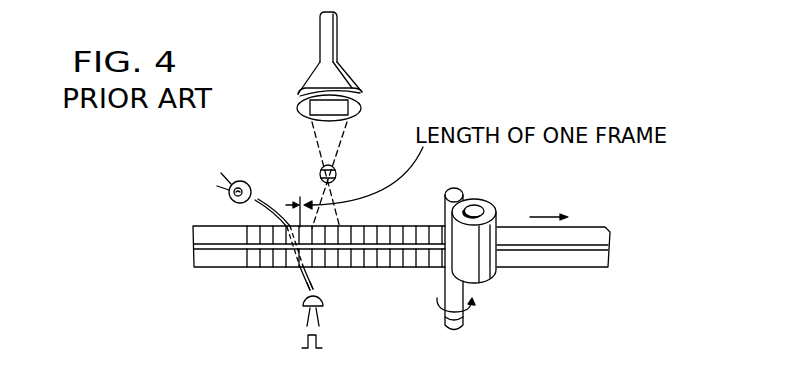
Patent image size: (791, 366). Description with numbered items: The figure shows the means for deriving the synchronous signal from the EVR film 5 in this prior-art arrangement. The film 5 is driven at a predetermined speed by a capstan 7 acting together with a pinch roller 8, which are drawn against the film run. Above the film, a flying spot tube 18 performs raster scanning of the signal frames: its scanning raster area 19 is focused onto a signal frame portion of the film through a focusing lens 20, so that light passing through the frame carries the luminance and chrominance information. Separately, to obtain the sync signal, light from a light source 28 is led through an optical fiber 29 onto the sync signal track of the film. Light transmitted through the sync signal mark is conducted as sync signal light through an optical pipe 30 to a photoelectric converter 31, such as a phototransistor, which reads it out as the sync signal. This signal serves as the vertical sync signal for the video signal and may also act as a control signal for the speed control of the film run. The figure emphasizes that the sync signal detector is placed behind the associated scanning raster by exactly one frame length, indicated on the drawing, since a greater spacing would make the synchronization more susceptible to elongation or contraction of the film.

The EVR film 5 is at (220, 268).
The capstan 7 is at (453, 188).
The pinch roller 8 is at (490, 204).
The flying spot tube 18 is at (338, 40).
The scanning raster area 19 is at (361, 110).
The focusing lens 20 is at (337, 173).
The light source 28 is at (246, 181).
The optical fiber 29 is at (272, 207).
The optical pipe 30 is at (305, 284).
The photoelectric converter 31 is at (325, 299).